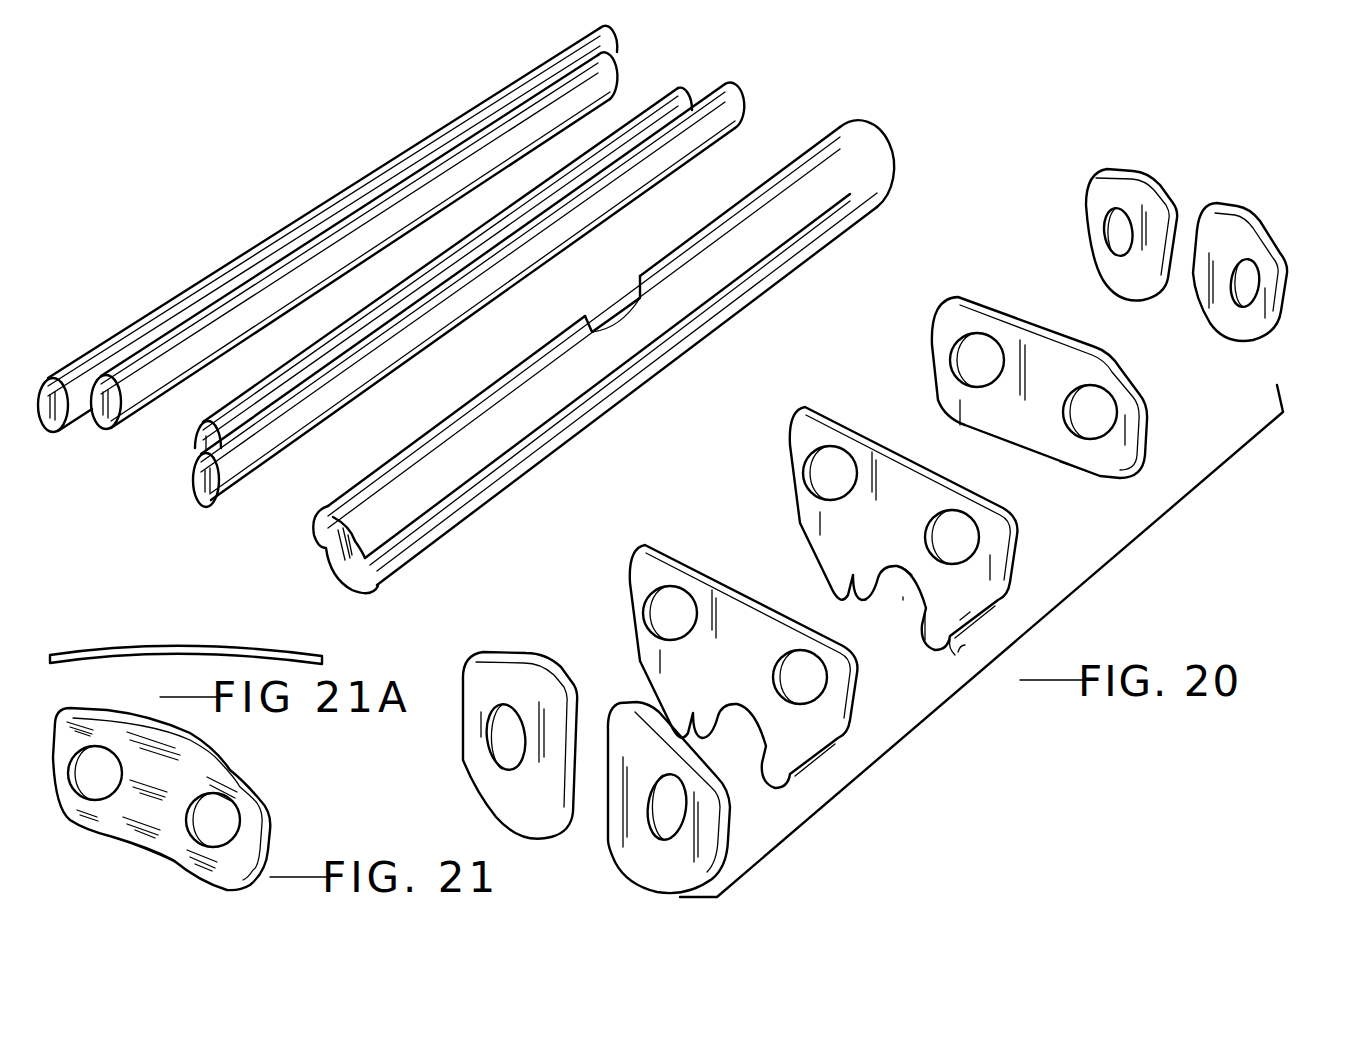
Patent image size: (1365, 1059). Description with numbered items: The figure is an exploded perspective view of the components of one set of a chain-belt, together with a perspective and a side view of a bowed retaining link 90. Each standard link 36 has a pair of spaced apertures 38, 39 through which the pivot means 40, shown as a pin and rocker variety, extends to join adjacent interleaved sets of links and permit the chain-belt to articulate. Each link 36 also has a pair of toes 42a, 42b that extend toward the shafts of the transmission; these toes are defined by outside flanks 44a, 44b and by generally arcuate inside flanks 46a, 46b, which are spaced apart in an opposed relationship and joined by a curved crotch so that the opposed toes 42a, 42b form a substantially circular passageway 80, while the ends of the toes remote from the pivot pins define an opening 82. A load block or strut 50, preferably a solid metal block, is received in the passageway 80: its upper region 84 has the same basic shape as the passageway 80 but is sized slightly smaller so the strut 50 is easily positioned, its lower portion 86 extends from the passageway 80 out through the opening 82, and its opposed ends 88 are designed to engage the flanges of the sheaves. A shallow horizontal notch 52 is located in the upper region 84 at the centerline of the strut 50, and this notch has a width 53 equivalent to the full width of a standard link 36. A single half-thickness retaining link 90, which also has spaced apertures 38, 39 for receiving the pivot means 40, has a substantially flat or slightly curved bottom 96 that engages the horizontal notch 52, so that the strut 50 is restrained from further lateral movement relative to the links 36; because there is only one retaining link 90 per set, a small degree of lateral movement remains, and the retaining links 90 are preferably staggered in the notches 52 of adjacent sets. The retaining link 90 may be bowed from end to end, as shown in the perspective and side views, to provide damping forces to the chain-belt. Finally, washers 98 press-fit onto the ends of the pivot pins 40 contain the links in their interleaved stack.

In FIG. 20, the pivot means 40 is at (300, 238).
In FIG. 20, the strut 50 is at (607, 363).
In FIG. 20, the horizontal notch 52 is at (600, 320).
In FIG. 20, the width 53 is at (650, 350).
In FIG. 20, the upper region 84 is at (318, 548).
In FIG. 20, the lower portion 86 is at (360, 598).
In FIG. 20, the opposed ends 88 is at (893, 172).
In FIG. 20, the link 36 is at (836, 440).
In FIG. 20, the aperture 38 is at (977, 544).
In FIG. 21, the aperture 38 is at (227, 823).
In FIG. 20, the aperture 39 is at (808, 478).
In FIG. 21, the aperture 39 is at (90, 760).
In FIG. 20, the toe 42a is at (955, 655).
In FIG. 20, the toe 42b is at (830, 550).
In FIG. 20, the outside flank 44a is at (958, 652).
In FIG. 20, the outside flank 44b is at (855, 578).
In FIG. 20, the inside flank 46a is at (968, 612).
In FIG. 20, the inside flank 46b is at (897, 565).
In FIG. 20, the passageway 80 is at (912, 608).
In FIG. 20, the opening 82 is at (903, 597).
In FIG. 20, the retaining link 90 is at (1045, 353).
In FIG. 21, the retaining link 90 is at (200, 757).
In FIG. 21A, the retaining link 90 is at (173, 648).
In FIG. 20, the bottom 96 is at (1048, 462).
In FIG. 21, the bottom 96 is at (157, 853).
In FIG. 20, the washer 98 is at (1137, 192).